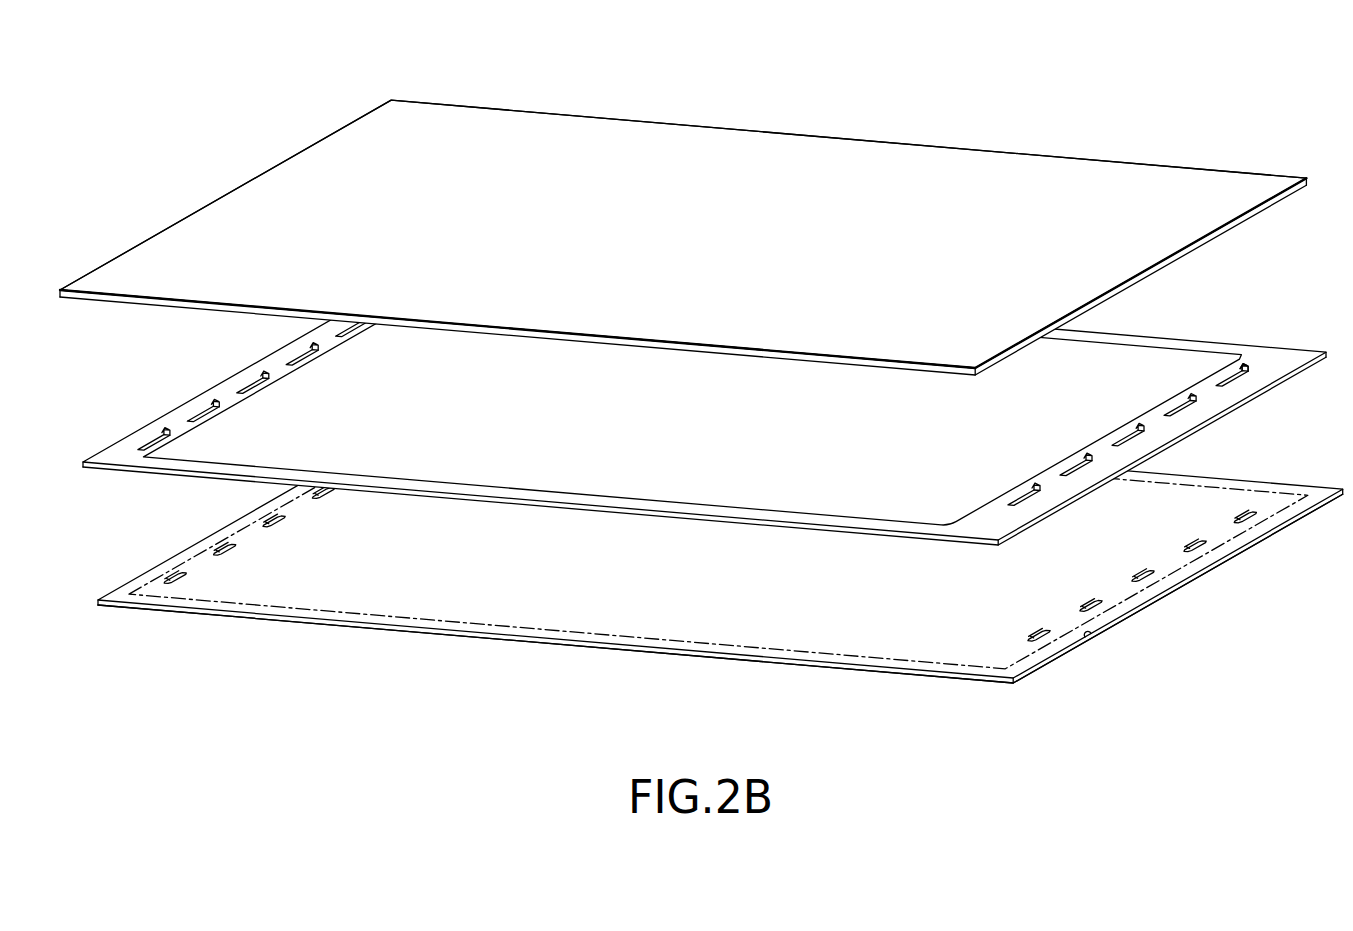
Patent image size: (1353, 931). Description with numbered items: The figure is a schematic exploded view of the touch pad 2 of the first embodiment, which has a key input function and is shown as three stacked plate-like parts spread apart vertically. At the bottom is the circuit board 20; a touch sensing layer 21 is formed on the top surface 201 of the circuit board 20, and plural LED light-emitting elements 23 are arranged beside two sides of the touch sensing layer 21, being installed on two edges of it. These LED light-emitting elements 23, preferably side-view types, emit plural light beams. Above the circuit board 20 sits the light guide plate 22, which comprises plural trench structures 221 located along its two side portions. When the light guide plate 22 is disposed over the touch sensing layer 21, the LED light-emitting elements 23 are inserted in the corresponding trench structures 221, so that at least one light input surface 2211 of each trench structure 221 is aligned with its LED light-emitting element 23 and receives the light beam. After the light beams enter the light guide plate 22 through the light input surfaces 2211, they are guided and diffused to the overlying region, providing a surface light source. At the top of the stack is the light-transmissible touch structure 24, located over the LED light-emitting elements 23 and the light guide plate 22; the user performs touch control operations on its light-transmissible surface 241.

The touch pad 2 is at (1225, 84).
The circuit board 20 is at (545, 644).
The touch sensing layer 21 is at (420, 604).
The top surface 201 is at (727, 654).
The light guide plate 22 is at (1200, 331).
The trench structure 221 is at (246, 377).
The light input surface 2211 is at (1247, 377).
The LED light-emitting element 23 is at (177, 573).
The light-transmissible touch structure 24 is at (1048, 163).
The light-transmissible surface 241 is at (833, 152).